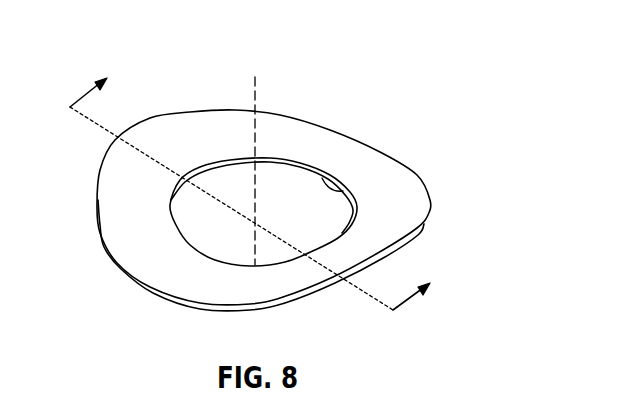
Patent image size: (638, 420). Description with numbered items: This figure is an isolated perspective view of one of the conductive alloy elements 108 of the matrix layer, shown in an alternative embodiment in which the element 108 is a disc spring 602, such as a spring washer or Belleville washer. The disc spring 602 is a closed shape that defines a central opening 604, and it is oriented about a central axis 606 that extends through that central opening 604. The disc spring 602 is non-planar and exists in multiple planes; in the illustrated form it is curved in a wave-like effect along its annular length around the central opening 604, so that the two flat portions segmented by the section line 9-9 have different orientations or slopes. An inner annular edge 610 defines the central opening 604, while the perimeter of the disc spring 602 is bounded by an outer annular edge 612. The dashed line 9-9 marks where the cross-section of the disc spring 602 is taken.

The conductive alloy element 108 is at (193, 122).
The disc spring 602 is at (323, 133).
The central opening 604 is at (184, 229).
The central axis 606 is at (258, 125).
The inner annular edge 610 is at (352, 193).
The outer edge 612 is at (402, 241).
The line 9- 9 is at (258, 183).